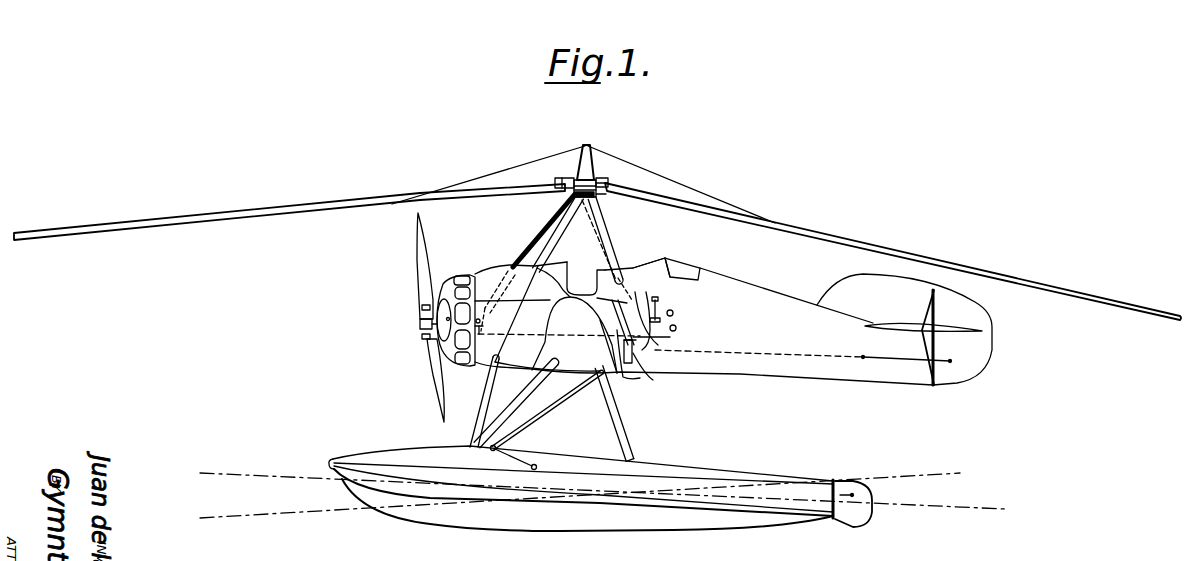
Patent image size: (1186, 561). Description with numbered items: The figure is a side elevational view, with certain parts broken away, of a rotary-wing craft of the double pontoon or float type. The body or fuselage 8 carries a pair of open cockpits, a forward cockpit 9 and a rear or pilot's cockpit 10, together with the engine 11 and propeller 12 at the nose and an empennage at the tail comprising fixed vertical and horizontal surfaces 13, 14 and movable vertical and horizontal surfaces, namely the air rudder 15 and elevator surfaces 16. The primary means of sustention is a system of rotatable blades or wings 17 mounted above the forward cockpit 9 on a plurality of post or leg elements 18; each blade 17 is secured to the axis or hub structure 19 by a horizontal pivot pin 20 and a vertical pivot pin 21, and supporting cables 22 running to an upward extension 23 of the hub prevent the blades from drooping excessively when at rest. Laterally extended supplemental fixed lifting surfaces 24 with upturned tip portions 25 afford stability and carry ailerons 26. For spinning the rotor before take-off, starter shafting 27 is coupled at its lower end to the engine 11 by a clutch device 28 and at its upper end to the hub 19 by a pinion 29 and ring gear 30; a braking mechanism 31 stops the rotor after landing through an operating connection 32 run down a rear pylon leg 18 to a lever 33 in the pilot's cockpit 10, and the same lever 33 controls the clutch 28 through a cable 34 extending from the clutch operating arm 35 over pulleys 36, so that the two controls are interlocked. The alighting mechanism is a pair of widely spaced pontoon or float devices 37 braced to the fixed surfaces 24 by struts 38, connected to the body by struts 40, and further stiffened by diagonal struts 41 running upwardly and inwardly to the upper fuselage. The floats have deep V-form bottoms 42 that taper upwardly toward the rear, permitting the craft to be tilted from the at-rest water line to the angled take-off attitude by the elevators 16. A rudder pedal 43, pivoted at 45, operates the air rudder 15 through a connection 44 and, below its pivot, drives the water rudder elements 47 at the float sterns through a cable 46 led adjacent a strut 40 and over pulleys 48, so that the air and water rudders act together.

The body or fuselage 8 is at (704, 321).
The forward cockpit 9 is at (571, 279).
The rear or pilot's cockpit 10 is at (665, 268).
The engine 11 is at (473, 254).
The propeller 12 is at (420, 271).
The fixed vertical surface 13 is at (904, 329).
The fixed horizontal surface 14 is at (880, 328).
The vertical air rudder 15 is at (982, 318).
The elevator surfaces 16 is at (960, 330).
The rotatable blades or wings 17 is at (284, 206).
The post or leg elements 18 is at (600, 248).
The axis or hub structure 19 is at (599, 179).
The horizontal pivot pin 20 is at (604, 192).
The vertical pivot pin 21 is at (608, 184).
The supporting cables 22 is at (511, 162).
The upward extension of the axis structure 23 is at (590, 146).
The supplemental fixed lifting surfaces 24 is at (547, 361).
The upturned tip portions 25 is at (574, 335).
The ailerons 26 is at (623, 377).
The shafting 27 is at (543, 224).
The clutch device 28 is at (503, 292).
The pinion 29 is at (567, 191).
The ring gear 30 is at (598, 198).
The braking mechanism 31 is at (592, 240).
The operating connection 32 is at (630, 294).
The operating member or lever 33 is at (657, 307).
The cable 34 is at (668, 337).
The clutch operating arm 35 is at (557, 318).
The pulleys 36 is at (676, 315).
The pontoon or float devices 37 is at (420, 460).
The struts 38 is at (535, 381).
The struts 40 is at (487, 387).
The diagonal struts 41 is at (621, 302).
The V-form bottoms 42 is at (459, 526).
The rudder pedal 43 is at (652, 354).
The connection 44 is at (904, 362).
The pivot 45 is at (648, 376).
The cable 46 is at (580, 397).
The water rudder elements 47 is at (872, 517).
The pulleys 48 is at (536, 464).